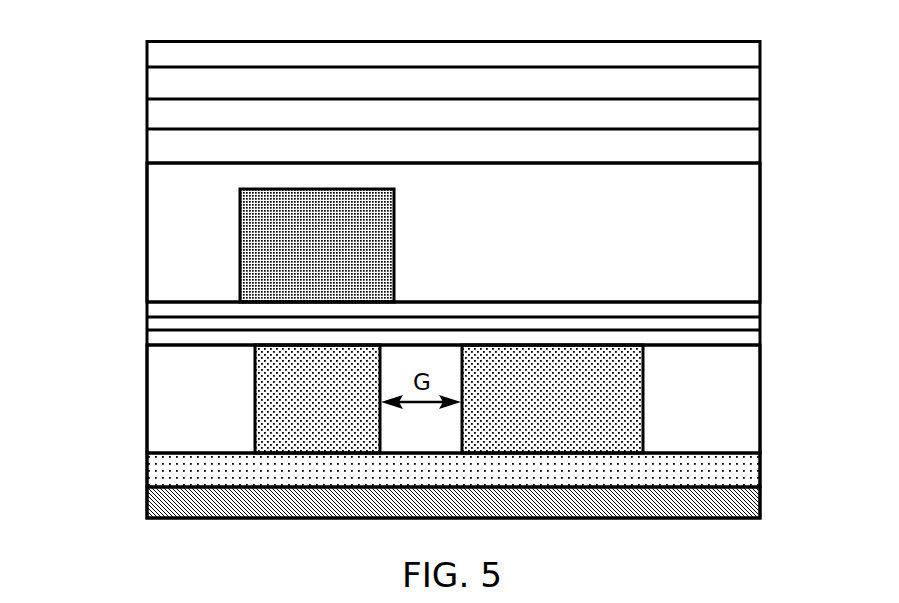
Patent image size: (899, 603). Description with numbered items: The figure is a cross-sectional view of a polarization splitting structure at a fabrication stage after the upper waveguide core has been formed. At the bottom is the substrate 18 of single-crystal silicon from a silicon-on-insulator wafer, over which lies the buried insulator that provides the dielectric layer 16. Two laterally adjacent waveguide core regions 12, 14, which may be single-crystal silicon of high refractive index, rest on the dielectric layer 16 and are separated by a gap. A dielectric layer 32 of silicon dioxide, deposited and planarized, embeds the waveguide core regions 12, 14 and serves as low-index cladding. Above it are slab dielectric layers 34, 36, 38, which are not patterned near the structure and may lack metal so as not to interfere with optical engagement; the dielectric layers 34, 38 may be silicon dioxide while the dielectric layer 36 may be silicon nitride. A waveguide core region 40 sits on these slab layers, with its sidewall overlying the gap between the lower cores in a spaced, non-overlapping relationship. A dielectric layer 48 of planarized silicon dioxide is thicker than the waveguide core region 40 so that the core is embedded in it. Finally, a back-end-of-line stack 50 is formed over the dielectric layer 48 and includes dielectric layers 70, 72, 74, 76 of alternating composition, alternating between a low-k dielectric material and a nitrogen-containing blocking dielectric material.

The back-end-of-line stack 50 is at (134, 84).
The dielectric layer 76 is at (727, 62).
The dielectric layer 74 is at (735, 88).
The dielectric layer 72 is at (735, 120).
The dielectric layer 70 is at (742, 147).
The dielectric layer 48 is at (167, 272).
The waveguide core region 40 is at (263, 247).
The dielectric layer 38 is at (733, 312).
The dielectric layer 36 is at (178, 326).
The dielectric layer 34 is at (738, 339).
The dielectric layer 32 is at (180, 413).
The waveguide core region 14 is at (297, 393).
The waveguide core region 12 is at (603, 394).
The dielectric layer 16 is at (178, 476).
The substrate 18 is at (733, 504).